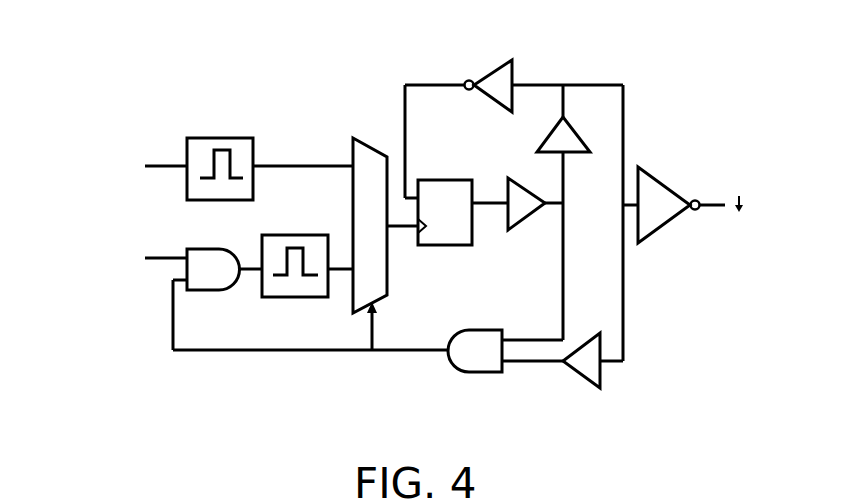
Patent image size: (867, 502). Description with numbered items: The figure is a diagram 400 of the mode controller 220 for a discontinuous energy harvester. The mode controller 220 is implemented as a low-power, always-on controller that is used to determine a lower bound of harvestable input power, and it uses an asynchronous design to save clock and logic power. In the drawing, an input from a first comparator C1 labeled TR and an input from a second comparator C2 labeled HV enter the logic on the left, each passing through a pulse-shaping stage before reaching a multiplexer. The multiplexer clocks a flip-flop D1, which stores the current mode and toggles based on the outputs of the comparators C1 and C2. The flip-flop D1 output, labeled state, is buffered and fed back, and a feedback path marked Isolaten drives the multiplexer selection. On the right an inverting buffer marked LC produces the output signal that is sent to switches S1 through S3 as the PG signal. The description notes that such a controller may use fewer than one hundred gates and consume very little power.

The diagram 400 is at (58, 22).
The mode controller 220 is at (327, 86).
The flip-flop D1 is at (445, 201).
The first comparator C1 is at (120, 150).
The second comparator C2 is at (120, 262).
The LC inverter LC is at (661, 205).